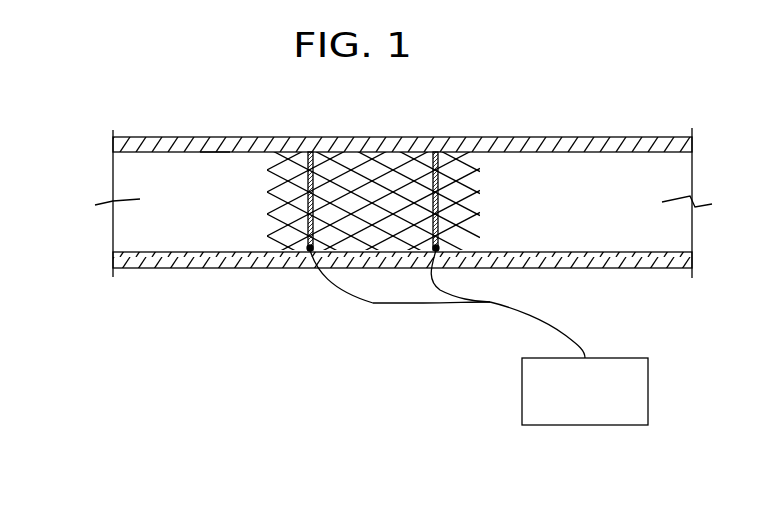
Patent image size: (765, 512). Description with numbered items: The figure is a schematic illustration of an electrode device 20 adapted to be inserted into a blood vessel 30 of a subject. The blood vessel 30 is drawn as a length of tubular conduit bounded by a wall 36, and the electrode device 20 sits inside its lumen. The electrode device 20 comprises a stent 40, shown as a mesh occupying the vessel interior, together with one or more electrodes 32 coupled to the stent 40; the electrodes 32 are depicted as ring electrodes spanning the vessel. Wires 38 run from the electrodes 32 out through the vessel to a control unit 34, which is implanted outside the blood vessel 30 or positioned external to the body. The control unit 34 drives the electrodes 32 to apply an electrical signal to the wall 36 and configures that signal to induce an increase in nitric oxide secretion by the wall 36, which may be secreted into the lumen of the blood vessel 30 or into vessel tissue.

The electrode device 20 is at (473, 95).
The blood vessel 30 is at (188, 137).
The electrodes 32 is at (267, 218).
The control unit 34 is at (522, 387).
The wall 36 is at (210, 153).
The wires 38 is at (418, 306).
The stent 40 is at (383, 167).